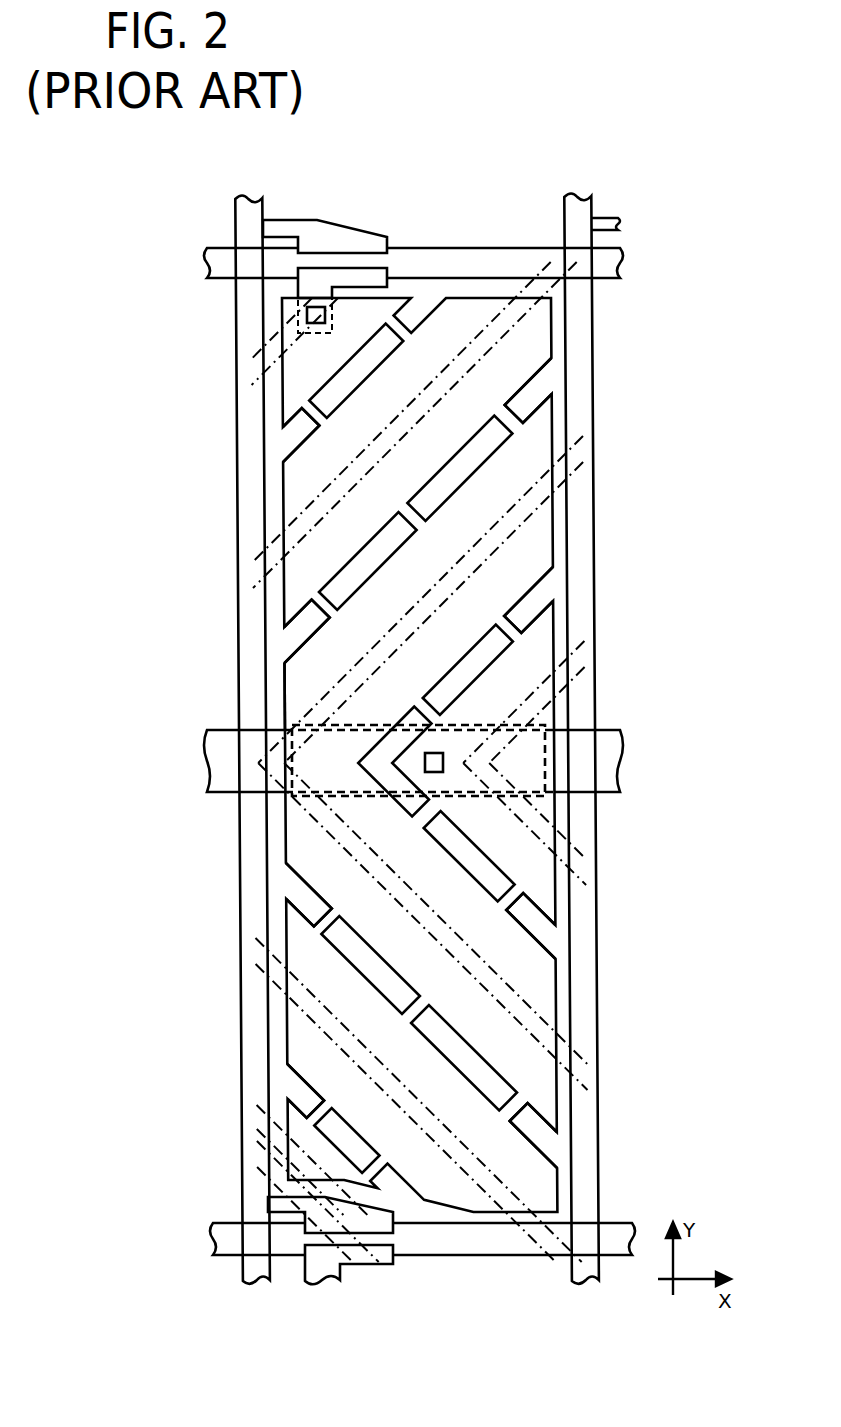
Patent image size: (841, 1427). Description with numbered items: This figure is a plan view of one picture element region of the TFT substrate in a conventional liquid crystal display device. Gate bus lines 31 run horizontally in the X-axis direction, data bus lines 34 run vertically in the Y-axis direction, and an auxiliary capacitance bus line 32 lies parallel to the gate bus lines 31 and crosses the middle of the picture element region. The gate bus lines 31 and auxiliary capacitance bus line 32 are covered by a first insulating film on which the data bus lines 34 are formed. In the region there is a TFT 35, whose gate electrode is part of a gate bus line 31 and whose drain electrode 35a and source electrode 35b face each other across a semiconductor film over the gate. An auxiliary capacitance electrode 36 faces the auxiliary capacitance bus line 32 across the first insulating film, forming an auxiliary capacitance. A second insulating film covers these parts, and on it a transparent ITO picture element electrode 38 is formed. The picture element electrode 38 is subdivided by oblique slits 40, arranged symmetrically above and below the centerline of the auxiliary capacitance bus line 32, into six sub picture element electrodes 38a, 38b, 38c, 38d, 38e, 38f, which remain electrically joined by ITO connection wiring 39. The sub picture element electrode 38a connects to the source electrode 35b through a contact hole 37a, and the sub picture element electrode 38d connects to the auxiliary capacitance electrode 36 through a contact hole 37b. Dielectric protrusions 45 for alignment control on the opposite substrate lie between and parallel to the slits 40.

The gate bus line 31 is at (218, 263).
The auxiliary capacitance bus line 32 is at (218, 772).
The data bus line 34 is at (253, 210).
The TFT 35 is at (354, 725).
The drain electrode 35a is at (350, 233).
The source electrode 35b is at (380, 275).
The auxiliary capacitance electrode 36 is at (367, 803).
The contact hole 37a is at (307, 313).
The contact hole 37b is at (437, 760).
The picture element electrode 38 is at (410, 755).
The sub picture element electrode 38a is at (298, 403).
The sub picture element electrode 38b is at (298, 475).
The sub picture element electrode 38c is at (298, 680).
The sub picture element electrode 38d is at (540, 637).
The sub picture element electrode 38e is at (298, 935).
The sub picture element electrode 38f is at (298, 1110).
The connection wiring 39 is at (508, 417).
The slit 40 is at (537, 387).
The protrusion for alignment control 45 is at (283, 527).